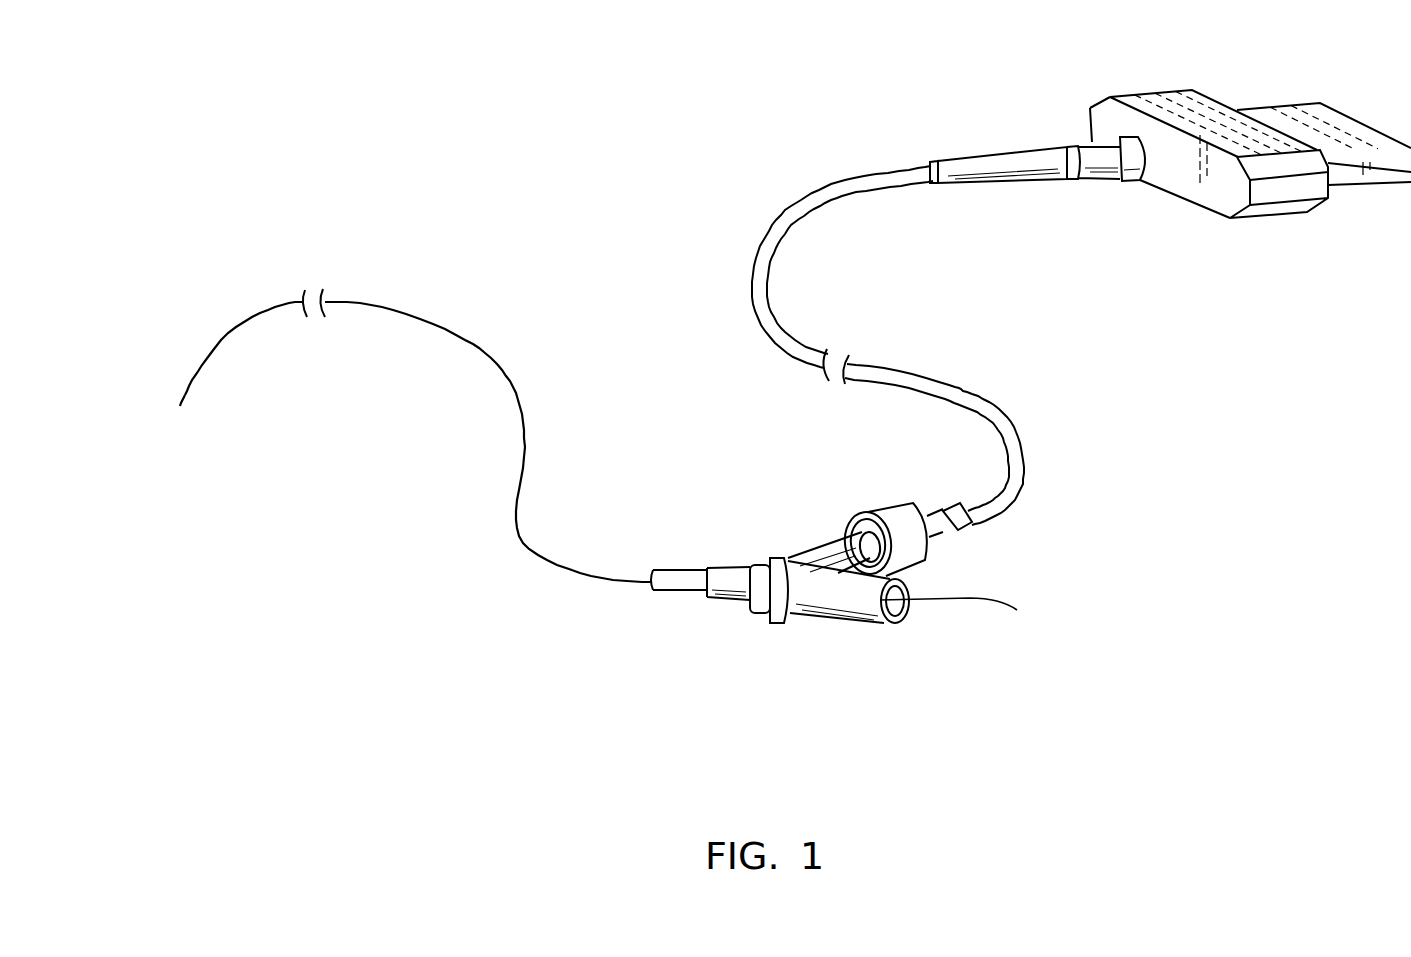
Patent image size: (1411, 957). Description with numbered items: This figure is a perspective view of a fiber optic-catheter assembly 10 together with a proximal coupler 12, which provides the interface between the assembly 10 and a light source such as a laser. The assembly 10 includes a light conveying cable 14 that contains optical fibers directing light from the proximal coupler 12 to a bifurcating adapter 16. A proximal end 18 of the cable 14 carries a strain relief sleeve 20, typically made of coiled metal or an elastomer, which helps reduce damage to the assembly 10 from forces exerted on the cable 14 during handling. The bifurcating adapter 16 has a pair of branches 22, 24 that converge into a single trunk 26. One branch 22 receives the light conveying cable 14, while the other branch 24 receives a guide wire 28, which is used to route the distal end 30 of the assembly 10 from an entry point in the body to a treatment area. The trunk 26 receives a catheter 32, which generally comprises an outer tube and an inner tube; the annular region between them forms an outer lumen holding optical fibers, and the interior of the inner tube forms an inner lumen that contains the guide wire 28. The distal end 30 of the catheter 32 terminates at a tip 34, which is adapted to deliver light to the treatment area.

The fiber optic-catheter assembly 10 is at (613, 153).
The proximal coupler 12 is at (1225, 203).
The light conveying cable 14 is at (777, 230).
The bifurcating adapter 16 is at (722, 536).
The proximal end 18 is at (952, 183).
The strain relief sleeve 20 is at (1142, 181).
The branch 22 is at (830, 543).
The branch 24 is at (910, 595).
The trunk 26 is at (756, 613).
The guide wire 28 is at (947, 603).
The distal end 30 is at (180, 406).
The catheter 32 is at (515, 458).
The tip 34 is at (177, 413).